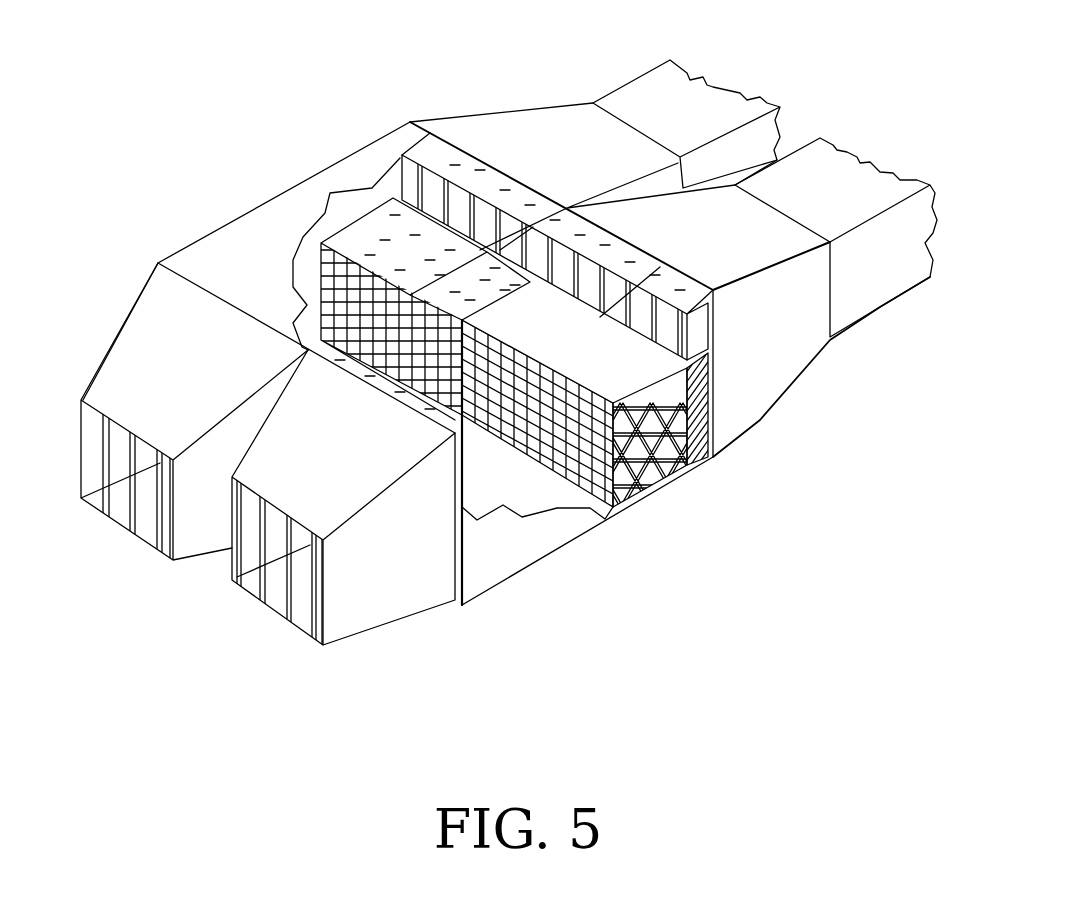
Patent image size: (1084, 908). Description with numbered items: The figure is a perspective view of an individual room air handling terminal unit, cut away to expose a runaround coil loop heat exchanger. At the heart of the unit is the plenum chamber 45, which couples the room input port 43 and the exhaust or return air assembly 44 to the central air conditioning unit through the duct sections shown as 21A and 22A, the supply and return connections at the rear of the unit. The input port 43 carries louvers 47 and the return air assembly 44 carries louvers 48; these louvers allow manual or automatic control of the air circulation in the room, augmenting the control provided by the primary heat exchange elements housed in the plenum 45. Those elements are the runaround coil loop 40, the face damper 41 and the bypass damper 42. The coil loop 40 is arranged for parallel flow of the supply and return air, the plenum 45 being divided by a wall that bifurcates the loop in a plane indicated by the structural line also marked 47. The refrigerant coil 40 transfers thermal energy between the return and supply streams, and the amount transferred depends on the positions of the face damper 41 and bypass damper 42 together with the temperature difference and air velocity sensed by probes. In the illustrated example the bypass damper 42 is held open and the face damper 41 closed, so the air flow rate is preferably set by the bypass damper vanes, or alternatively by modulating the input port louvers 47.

The runaround coil loop 40 is at (687, 467).
The face damper 41 is at (690, 433).
The bypass damper 42 is at (697, 337).
The room input port 43 is at (305, 460).
The exhaust or return air assembly 44 is at (152, 381).
The plenum chamber 45 is at (517, 557).
The louvers 47 is at (308, 607).
The louvers 48 is at (157, 520).
The cover plate 21A is at (860, 203).
The cover plate 22A is at (707, 115).